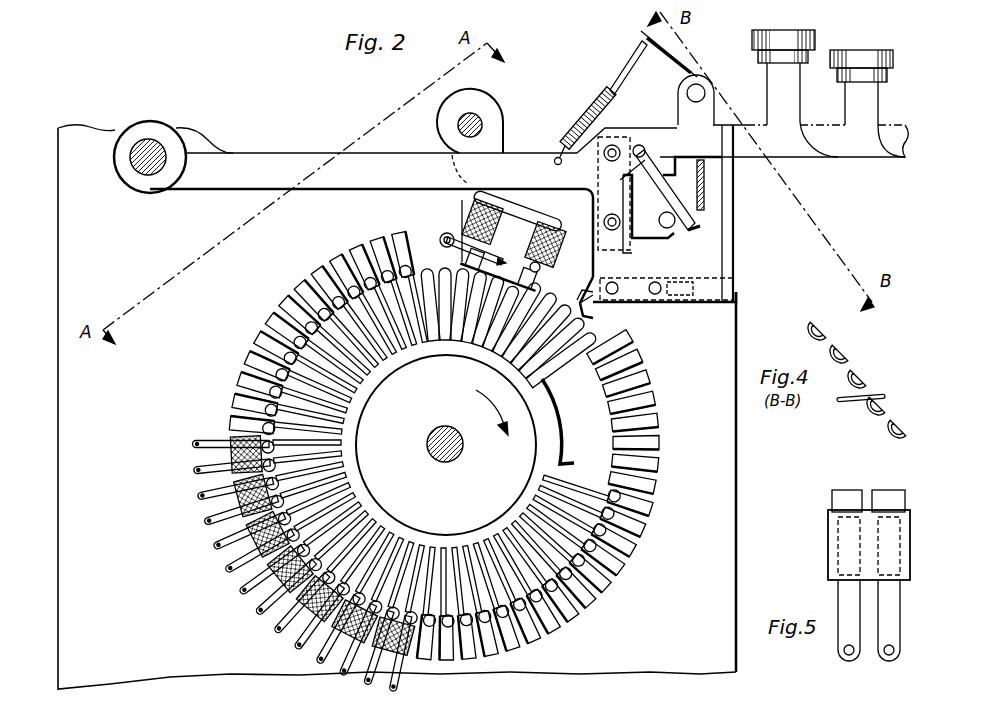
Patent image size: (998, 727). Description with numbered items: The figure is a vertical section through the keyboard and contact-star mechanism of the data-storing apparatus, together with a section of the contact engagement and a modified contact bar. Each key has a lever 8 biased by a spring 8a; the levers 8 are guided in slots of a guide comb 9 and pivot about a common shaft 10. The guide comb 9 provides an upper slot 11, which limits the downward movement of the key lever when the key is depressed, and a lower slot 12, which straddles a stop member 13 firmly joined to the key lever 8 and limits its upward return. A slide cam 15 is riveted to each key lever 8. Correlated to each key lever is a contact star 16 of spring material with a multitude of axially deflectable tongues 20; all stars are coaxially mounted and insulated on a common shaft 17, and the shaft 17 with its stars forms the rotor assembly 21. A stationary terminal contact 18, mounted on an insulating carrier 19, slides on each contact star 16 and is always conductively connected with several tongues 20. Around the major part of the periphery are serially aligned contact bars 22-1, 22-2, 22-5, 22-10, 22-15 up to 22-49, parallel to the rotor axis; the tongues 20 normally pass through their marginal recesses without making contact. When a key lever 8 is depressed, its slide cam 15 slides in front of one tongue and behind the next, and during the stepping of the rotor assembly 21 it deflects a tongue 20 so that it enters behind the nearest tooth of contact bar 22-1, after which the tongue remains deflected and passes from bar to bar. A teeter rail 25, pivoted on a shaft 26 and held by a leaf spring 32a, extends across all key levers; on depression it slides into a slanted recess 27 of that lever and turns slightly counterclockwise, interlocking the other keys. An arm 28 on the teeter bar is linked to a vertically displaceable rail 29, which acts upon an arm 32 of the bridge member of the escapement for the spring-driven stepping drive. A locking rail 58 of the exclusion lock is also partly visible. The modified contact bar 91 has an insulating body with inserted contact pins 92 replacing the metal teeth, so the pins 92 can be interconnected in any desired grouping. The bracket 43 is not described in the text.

In FIG. 2, the key lever 8 is at (290, 168).
In FIG. 2, the spring 8a is at (585, 118).
In FIG. 2, the guide comb 9 is at (734, 204).
In FIG. 2, the common shaft 10 is at (148, 150).
In FIG. 2, the upper slot 11 is at (724, 178).
In FIG. 2, the lower slot 12 is at (742, 296).
In FIG. 2, the stop member 13 is at (698, 286).
In FIG. 2, the slide cam 15 is at (602, 313).
In FIG. 4, the slide cam 15 is at (872, 397).
In FIG. 2, the contact star 16 is at (400, 352).
In FIG. 2, the shaft 17 is at (452, 450).
In FIG. 2, the terminal contact 18 is at (442, 236).
In FIG. 2, the insulating carrier 19 is at (540, 220).
In FIG. 2, the contact tongue 20 is at (588, 475).
In FIG. 4, the contact tongue 20 is at (880, 420).
In FIG. 2, the rotor assembly 21 is at (367, 437).
In FIG. 2, the contact bar 22-1 is at (622, 342).
In FIG. 2, the contact bar 22-2 is at (640, 357).
In FIG. 2, the contact bar 22-5 is at (650, 421).
In FIG. 2, the contact bar 22-10 is at (640, 530).
In FIG. 2, the contact bar 22-15 is at (568, 612).
In FIG. 2, the contact bar 22-49 is at (395, 240).
In FIG. 2, the teeter rail 25 is at (694, 234).
In FIG. 2, the shaft 26 is at (672, 227).
In FIG. 2, the slanted recess 27 is at (641, 145).
In FIG. 2, the arm 28 is at (658, 240).
In FIG. 2, the vertically displaceable rail 29 is at (595, 192).
In FIG. 2, the arm 32 is at (600, 262).
In FIG. 2, the leaf spring 32a is at (597, 298).
In FIG. 2, the pivot bracket 43 is at (458, 125).
In FIG. 2, the locking rail 58 is at (705, 196).
In FIG. 2, the contact bar 91 is at (373, 645).
In FIG. 5, the contact bar 91 is at (830, 574).
In FIG. 2, the contact pin 92 is at (390, 650).
In FIG. 5, the contact pin 92 is at (843, 508).